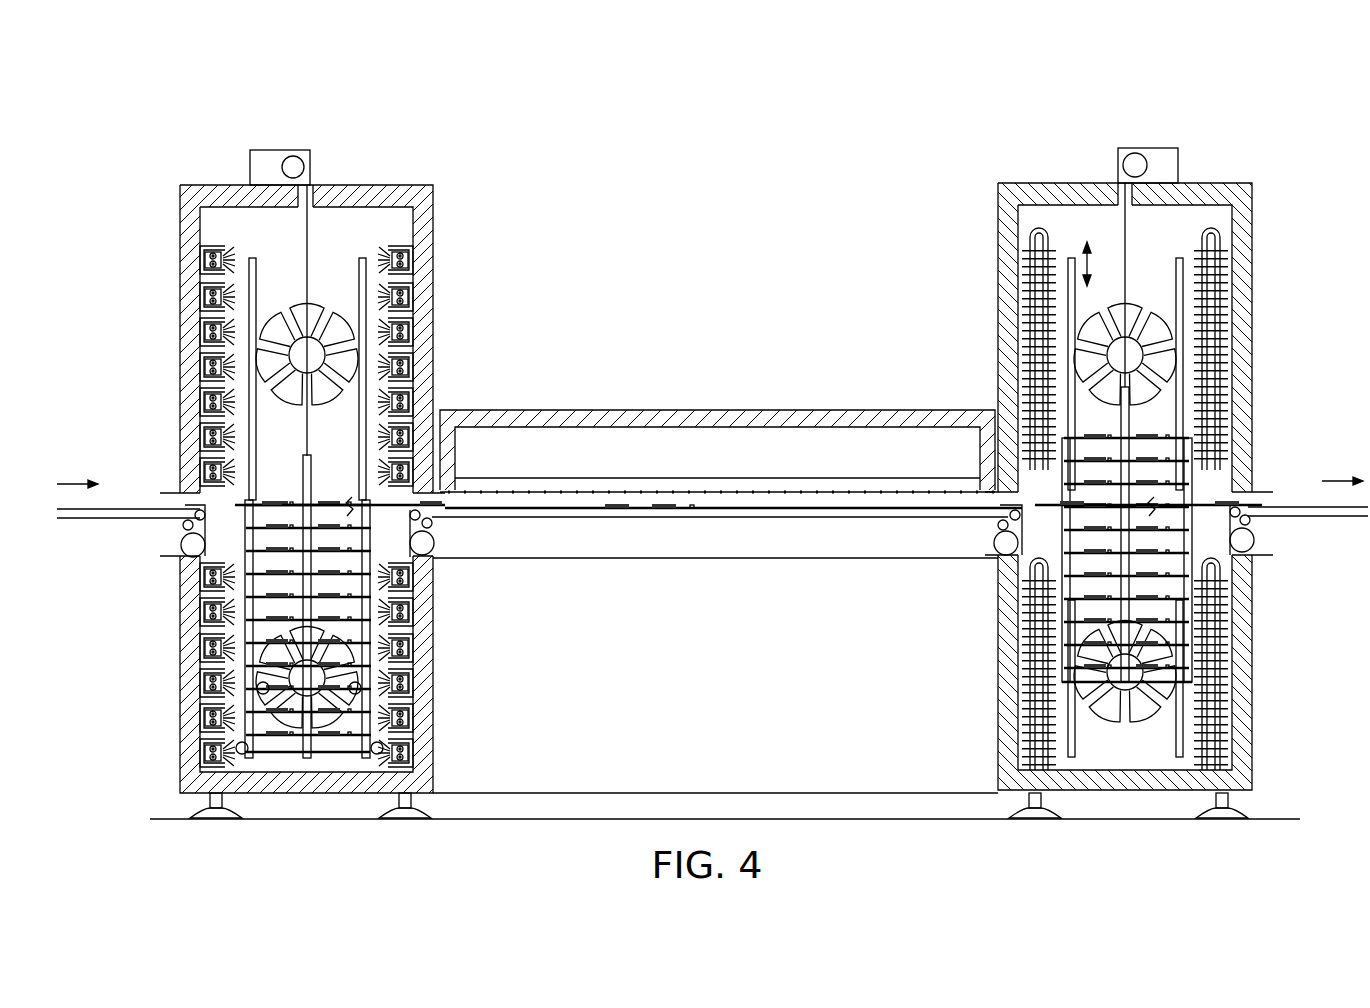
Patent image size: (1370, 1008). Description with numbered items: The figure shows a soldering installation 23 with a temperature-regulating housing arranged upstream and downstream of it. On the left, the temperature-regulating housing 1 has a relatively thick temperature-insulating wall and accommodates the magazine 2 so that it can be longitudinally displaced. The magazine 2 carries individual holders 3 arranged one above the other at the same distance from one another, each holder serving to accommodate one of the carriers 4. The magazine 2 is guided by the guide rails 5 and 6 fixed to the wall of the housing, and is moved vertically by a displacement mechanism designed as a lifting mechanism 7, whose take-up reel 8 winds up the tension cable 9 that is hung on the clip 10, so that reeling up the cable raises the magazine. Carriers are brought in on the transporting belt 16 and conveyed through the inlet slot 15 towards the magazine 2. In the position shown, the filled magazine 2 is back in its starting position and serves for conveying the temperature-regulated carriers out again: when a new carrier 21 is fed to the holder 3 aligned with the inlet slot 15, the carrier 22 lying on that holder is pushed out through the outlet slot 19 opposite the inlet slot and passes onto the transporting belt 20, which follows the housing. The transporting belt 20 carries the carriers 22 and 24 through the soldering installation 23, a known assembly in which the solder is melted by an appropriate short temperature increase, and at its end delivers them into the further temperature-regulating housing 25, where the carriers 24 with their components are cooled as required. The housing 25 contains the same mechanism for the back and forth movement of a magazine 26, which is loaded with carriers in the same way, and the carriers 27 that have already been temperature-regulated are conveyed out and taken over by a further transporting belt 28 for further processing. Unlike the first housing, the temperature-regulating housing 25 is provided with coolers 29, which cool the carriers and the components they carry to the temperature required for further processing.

The temperature-regulating housing 1 is at (425, 229).
The magazine 2 is at (290, 513).
The holders 3 is at (256, 578).
The carriers 4 is at (240, 748).
The guide rail 5 is at (252, 258).
The guide rail 6 is at (362, 258).
The lifting mechanism 7 is at (262, 160).
The take-up reel 8 is at (293, 156).
The tension cable 9 is at (308, 234).
The clip 10 is at (304, 460).
The inlet slot 15 is at (173, 497).
The transporting belt 16 is at (140, 519).
The outlet slot 19 is at (425, 492).
The transporting belt 20 is at (465, 520).
The carrier 21 is at (215, 498).
The carrier 22 is at (375, 498).
The soldering installation 23 is at (772, 410).
The carriers 24 is at (643, 492).
The temperature-regulating housing 25 is at (1008, 232).
The magazine 26 is at (1193, 477).
The carriers 27 is at (1212, 505).
The transporting belt 28 is at (1292, 519).
The coolers 29 is at (1209, 230).